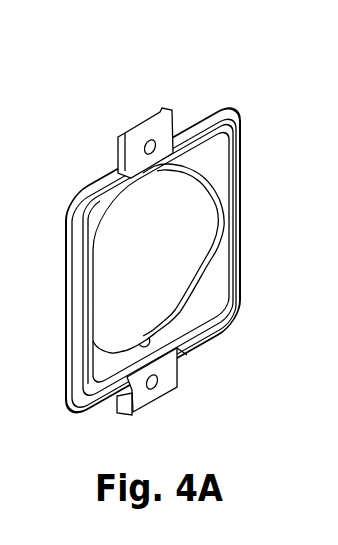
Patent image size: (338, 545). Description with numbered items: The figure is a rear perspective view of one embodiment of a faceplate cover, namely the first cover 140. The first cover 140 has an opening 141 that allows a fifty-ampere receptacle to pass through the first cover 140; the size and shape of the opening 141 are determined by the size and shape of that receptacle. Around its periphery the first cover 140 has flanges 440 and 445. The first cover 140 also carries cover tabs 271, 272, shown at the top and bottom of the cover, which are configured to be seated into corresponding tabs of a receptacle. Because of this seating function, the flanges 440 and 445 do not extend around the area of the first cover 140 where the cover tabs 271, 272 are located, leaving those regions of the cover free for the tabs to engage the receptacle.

The first cover 140 is at (165, 245).
The flange 440 is at (65, 270).
The flange 445 is at (242, 252).
The opening 141 is at (220, 224).
The cover tab 271 is at (168, 133).
The cover tab 272 is at (158, 388).